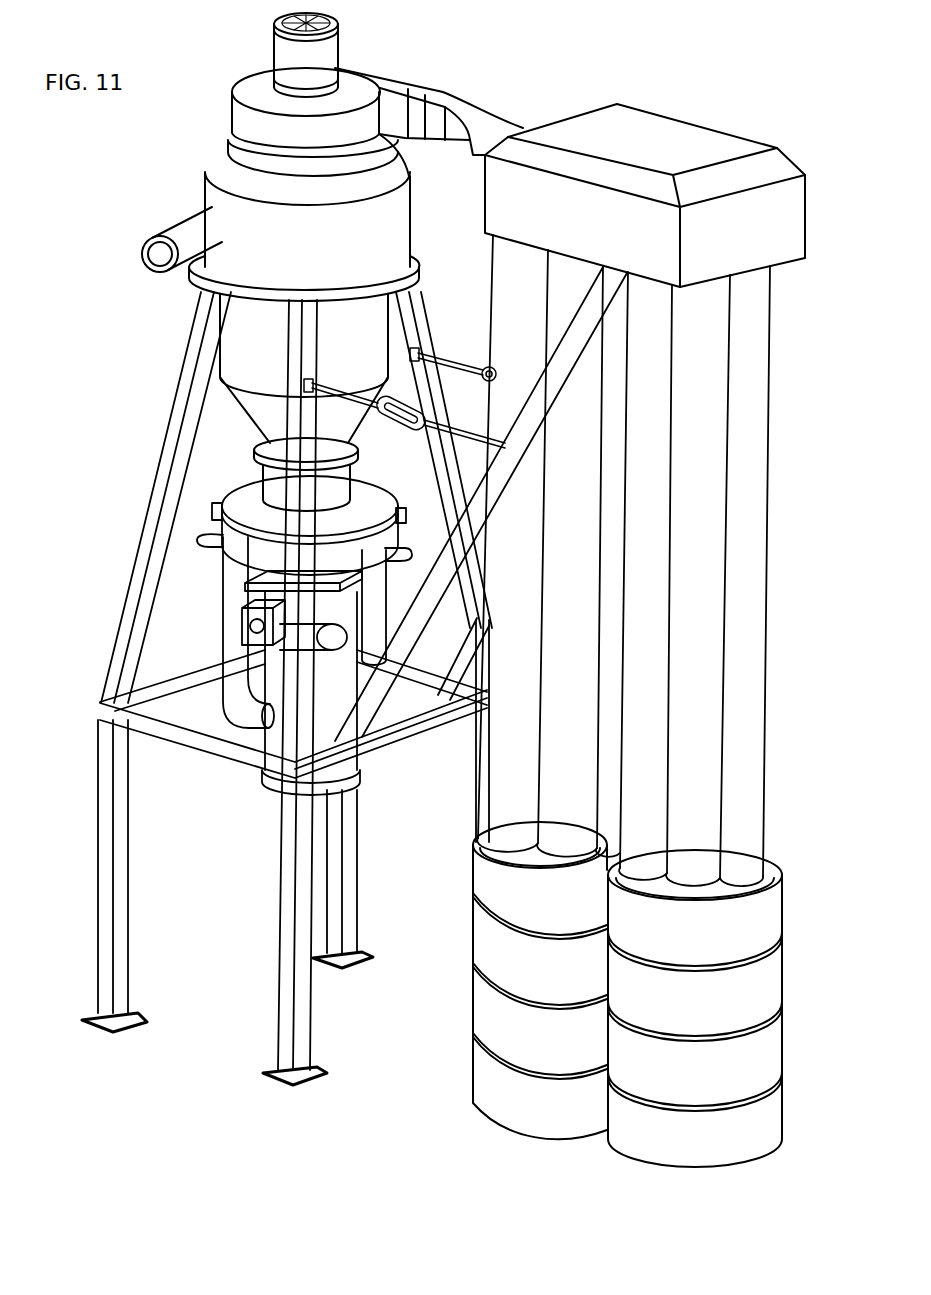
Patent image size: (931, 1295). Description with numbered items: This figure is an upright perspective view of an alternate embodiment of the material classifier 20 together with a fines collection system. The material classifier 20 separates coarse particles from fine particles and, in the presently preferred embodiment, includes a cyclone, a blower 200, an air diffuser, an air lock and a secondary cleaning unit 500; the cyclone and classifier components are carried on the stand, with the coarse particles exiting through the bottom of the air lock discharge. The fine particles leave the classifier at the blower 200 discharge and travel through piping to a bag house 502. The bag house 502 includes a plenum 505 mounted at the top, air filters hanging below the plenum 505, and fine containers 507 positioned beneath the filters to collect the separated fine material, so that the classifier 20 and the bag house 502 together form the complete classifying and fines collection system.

The material classifier 20 is at (140, 403).
The blower 200 is at (402, 88).
The secondary cleaning unit 500 is at (216, 784).
The bag house 502 is at (800, 450).
The plenum 505 is at (618, 122).
The fine containers 507 is at (490, 1012).